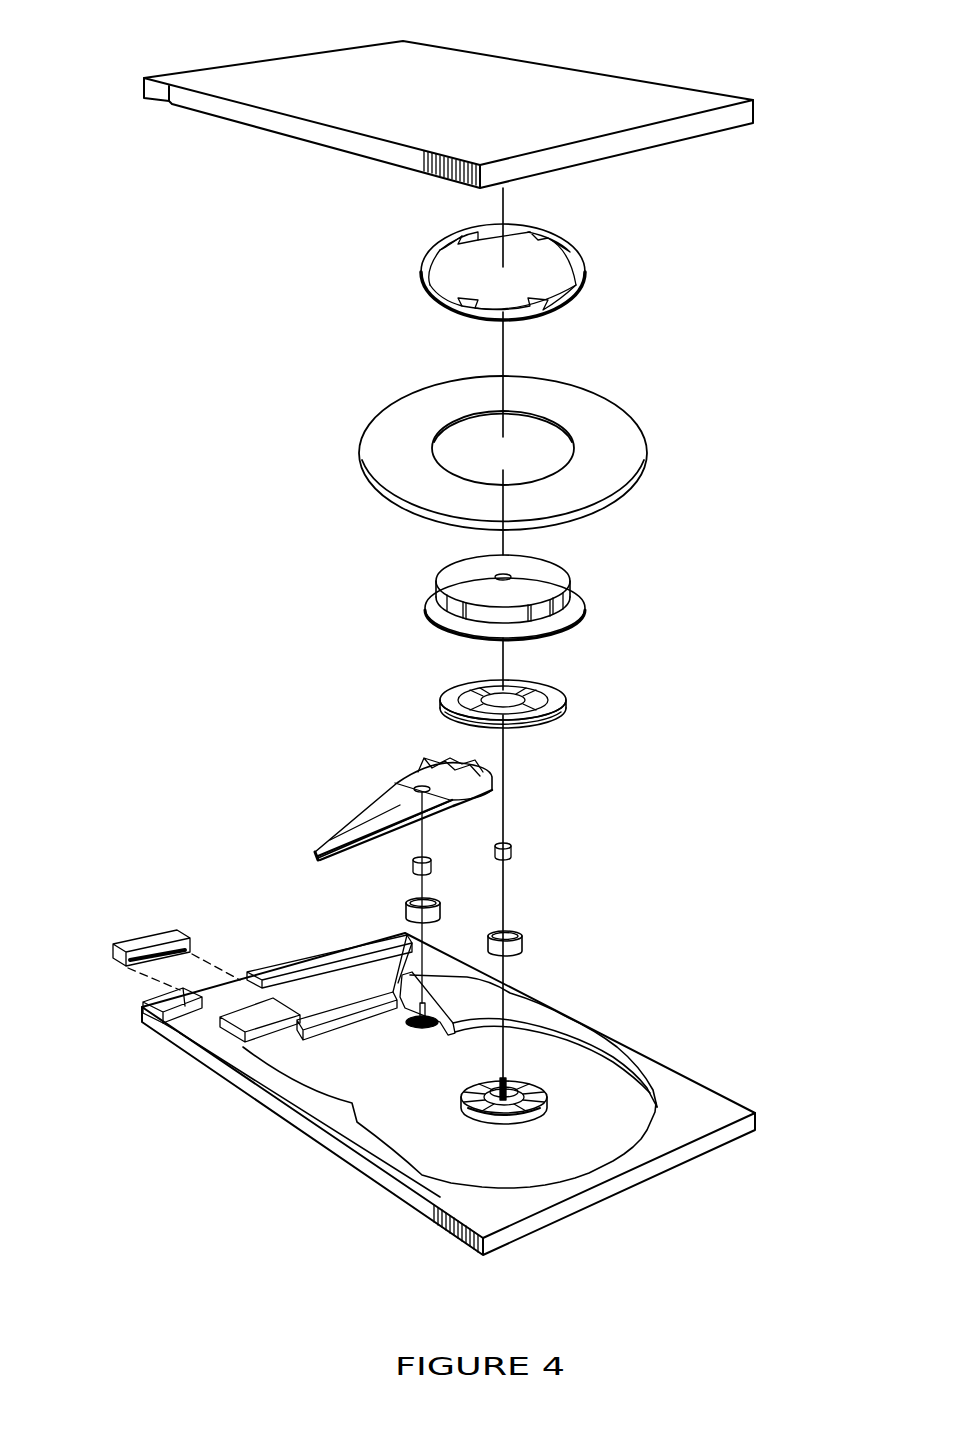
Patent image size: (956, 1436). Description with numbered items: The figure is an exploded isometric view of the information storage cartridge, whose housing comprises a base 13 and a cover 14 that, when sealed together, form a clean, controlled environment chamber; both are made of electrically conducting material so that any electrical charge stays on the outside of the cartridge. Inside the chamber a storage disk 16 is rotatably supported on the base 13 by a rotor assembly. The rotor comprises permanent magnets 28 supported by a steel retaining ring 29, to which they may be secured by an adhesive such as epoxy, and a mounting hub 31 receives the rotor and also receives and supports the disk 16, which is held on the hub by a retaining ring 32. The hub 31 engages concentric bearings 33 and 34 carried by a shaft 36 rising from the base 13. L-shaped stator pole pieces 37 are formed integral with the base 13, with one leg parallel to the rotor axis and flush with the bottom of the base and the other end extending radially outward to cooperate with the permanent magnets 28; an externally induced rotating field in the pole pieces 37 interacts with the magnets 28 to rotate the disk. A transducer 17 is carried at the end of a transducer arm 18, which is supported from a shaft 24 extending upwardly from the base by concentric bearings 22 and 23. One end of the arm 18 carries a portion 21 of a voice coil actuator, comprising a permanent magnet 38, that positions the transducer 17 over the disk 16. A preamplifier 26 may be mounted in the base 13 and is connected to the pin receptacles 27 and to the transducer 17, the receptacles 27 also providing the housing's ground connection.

The base 13 is at (444, 1060).
The cover 14 is at (597, 102).
The storage disk 16 is at (618, 458).
The transducer 17 is at (316, 856).
The transducer arm 18 is at (409, 766).
The portion of voice coil actuator 21 is at (487, 773).
The bearing 22 is at (405, 908).
The bearing 23 is at (412, 875).
The shaft 24 is at (445, 1017).
The preamplifier 26 is at (178, 1040).
The pin receptacles 27 is at (160, 938).
The permanent magnets 28 is at (545, 683).
The steel retaining ring 29 is at (553, 710).
The mounting hub 31 is at (572, 601).
The retaining ring 32 is at (583, 277).
The bearing 33 is at (513, 850).
The bearing 34 is at (525, 945).
The shaft 36 is at (510, 1080).
The L-shaped stator pole pieces 37 is at (547, 1105).
The permanent magnet 38 is at (432, 768).